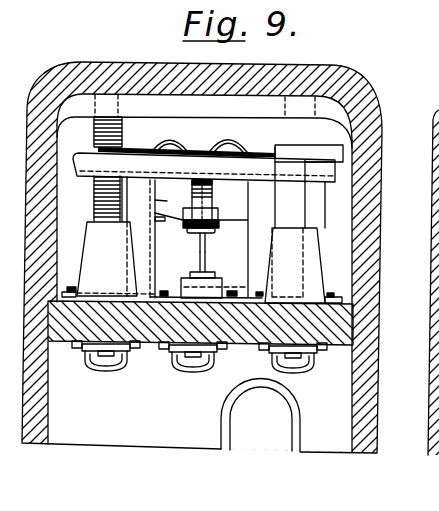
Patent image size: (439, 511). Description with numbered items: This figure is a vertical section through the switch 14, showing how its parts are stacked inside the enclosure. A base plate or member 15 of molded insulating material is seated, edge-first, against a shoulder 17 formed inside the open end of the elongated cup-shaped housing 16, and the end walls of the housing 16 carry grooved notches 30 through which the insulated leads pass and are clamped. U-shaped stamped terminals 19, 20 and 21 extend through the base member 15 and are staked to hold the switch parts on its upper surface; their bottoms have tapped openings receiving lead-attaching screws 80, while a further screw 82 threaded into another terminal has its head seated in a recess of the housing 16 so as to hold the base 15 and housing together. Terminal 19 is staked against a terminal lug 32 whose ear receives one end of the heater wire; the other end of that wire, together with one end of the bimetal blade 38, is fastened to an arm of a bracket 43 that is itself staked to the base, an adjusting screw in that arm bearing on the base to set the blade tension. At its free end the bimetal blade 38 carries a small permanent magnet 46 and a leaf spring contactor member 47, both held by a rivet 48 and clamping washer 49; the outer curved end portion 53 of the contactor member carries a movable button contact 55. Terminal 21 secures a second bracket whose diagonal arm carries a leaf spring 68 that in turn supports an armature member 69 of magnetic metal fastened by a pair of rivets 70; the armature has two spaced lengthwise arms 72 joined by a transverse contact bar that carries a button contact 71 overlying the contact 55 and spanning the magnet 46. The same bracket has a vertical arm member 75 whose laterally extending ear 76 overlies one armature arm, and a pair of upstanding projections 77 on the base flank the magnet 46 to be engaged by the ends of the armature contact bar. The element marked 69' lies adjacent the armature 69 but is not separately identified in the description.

The switch 14 is at (58, 48).
The base plate or member 15 is at (333, 333).
The cup-shaped housing 16 is at (191, 80).
The shoulder 17 is at (353, 311).
The terminal 19 is at (207, 349).
The terminal 20 is at (112, 348).
The terminal 21 is at (318, 352).
The grooved notches 30 is at (289, 422).
The terminal lug 32 is at (175, 298).
The bimetal blade 38 is at (187, 224).
The bracket 43 is at (246, 232).
The permanent magnet 46 is at (155, 199).
The leaf spring contactor member 47 is at (157, 221).
The rivet 48 is at (207, 247).
The clamping washer 49 is at (212, 233).
The curved end portion 53 is at (160, 212).
The movable button contact 55 is at (218, 210).
The leaf spring 68 is at (254, 154).
The armature member 69 is at (172, 137).
The cam lobe 69' is at (179, 133).
The rivets 70 is at (224, 151).
The button contact 71 is at (214, 189).
The arms 72 is at (85, 165).
The vertically extending arm member 75 is at (308, 202).
The laterally extending ear 76 is at (337, 152).
The upstanding projections 77 is at (90, 232).
The screws 80 is at (125, 366).
The screw 82 is at (94, 134).